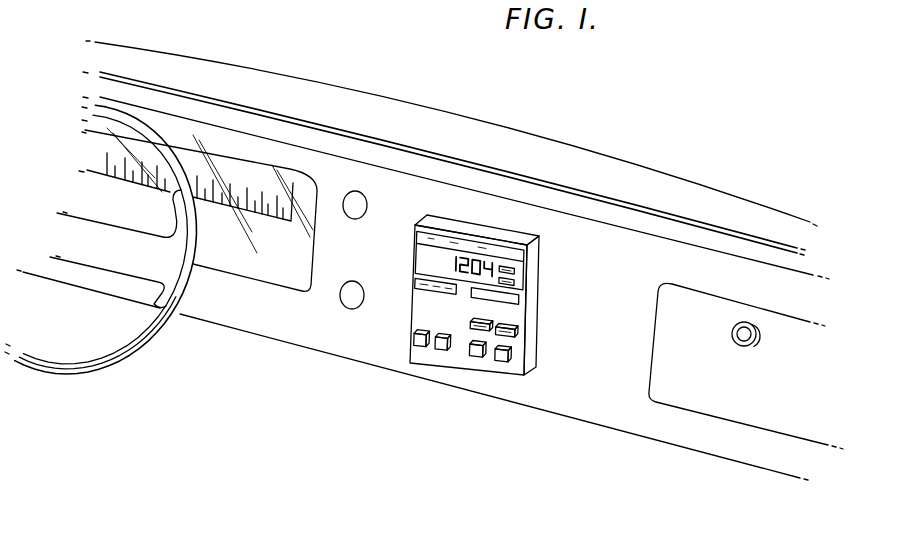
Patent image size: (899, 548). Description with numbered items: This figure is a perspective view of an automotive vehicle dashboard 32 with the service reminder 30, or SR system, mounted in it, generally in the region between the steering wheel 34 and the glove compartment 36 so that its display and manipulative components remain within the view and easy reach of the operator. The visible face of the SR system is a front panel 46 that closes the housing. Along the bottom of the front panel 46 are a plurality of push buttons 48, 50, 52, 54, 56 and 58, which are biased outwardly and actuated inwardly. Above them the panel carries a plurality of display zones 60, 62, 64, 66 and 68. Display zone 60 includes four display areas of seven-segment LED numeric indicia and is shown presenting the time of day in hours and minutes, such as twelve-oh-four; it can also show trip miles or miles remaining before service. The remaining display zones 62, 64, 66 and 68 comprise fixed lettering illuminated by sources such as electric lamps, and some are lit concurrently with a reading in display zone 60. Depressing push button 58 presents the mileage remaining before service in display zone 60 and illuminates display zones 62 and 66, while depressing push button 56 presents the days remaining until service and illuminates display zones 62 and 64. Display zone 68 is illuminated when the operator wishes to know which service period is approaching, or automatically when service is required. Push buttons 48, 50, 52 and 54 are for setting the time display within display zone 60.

The service reminder 30 is at (489, 316).
The dashboard 32 is at (584, 406).
The steering wheel 34 is at (139, 352).
The glove compartment 36 is at (658, 376).
The front panel 46 is at (531, 309).
The push button 48 is at (421, 345).
The push button 50 is at (443, 349).
The push button 52 is at (477, 357).
The push button 54 is at (502, 362).
The push button 56 is at (472, 325).
The push button 58 is at (522, 335).
The display zone 60 is at (432, 253).
The display zone 62 is at (414, 281).
The display zone 64 is at (500, 271).
The display zone 66 is at (522, 291).
The display zone 68 is at (490, 250).